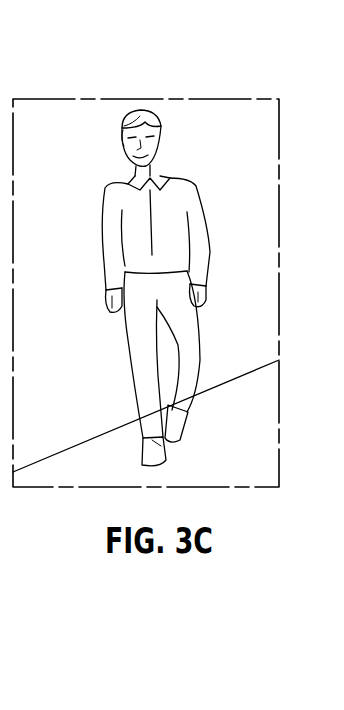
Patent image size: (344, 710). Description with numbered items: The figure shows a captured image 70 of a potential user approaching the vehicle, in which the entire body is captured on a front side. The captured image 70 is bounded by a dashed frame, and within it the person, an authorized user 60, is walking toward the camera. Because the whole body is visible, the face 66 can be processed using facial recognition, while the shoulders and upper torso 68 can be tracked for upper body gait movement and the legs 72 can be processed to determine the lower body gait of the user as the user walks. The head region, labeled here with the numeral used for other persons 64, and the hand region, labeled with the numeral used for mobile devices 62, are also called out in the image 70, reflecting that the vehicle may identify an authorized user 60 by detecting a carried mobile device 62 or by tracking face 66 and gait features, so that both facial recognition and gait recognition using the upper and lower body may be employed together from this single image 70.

The authorized user 60 is at (167, 260).
The mobile device 62 is at (200, 298).
The other person 64 is at (122, 121).
The face 66 is at (153, 122).
The upper torso 68 is at (172, 204).
The captured image 70 is at (233, 98).
The legs 72 is at (200, 360).